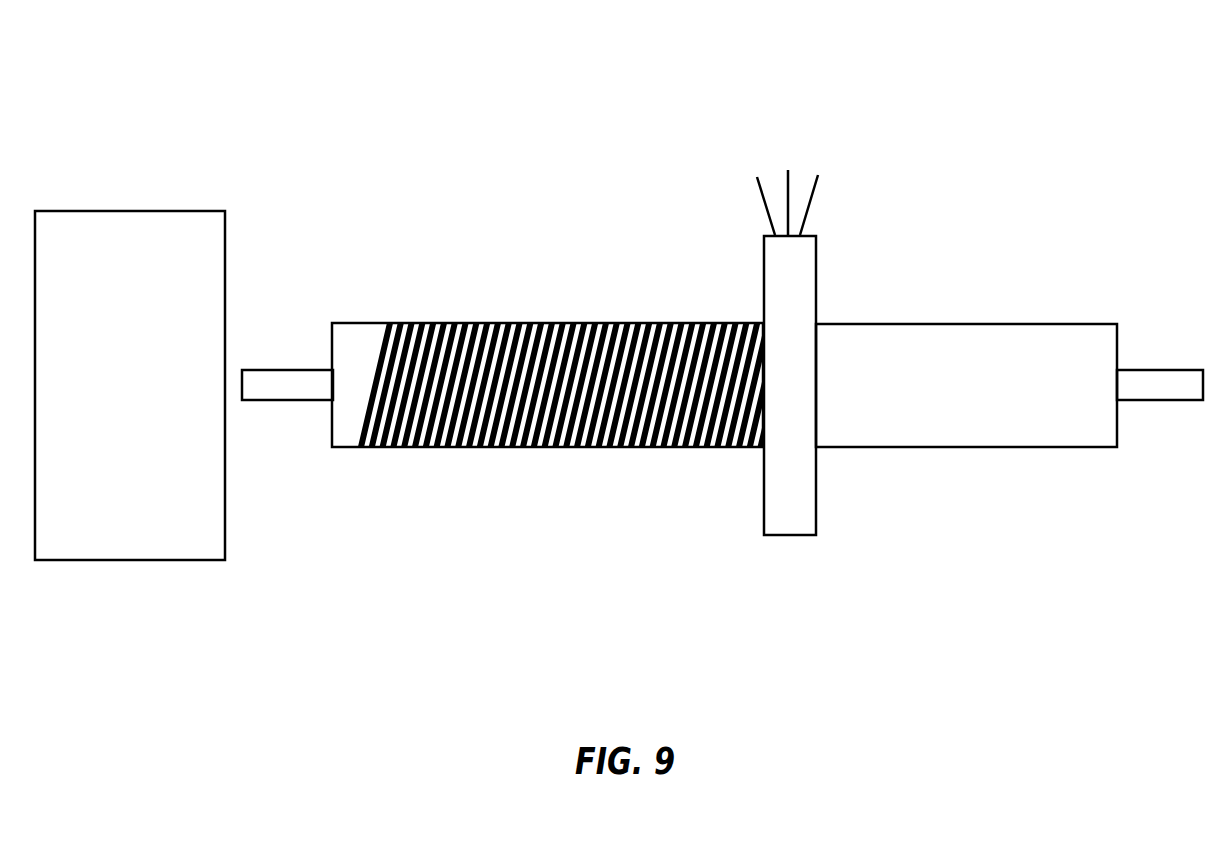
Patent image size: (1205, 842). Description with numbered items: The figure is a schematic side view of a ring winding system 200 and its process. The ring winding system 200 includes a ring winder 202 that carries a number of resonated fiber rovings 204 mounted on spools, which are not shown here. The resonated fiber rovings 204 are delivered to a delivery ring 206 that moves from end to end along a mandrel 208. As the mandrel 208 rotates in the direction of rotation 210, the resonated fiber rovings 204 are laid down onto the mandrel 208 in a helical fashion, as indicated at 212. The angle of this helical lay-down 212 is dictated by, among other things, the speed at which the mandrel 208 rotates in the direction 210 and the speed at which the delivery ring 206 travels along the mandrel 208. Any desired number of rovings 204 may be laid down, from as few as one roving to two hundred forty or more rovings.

The ring winding system 200 is at (1024, 80).
The ring winder 202 is at (104, 399).
The resonated fiber rovings 204 is at (823, 205).
The delivery ring 206 is at (746, 247).
The mandrel 208 is at (920, 458).
The direction of rotation 210 is at (283, 434).
The helical lay-down of rovings 212 is at (578, 456).